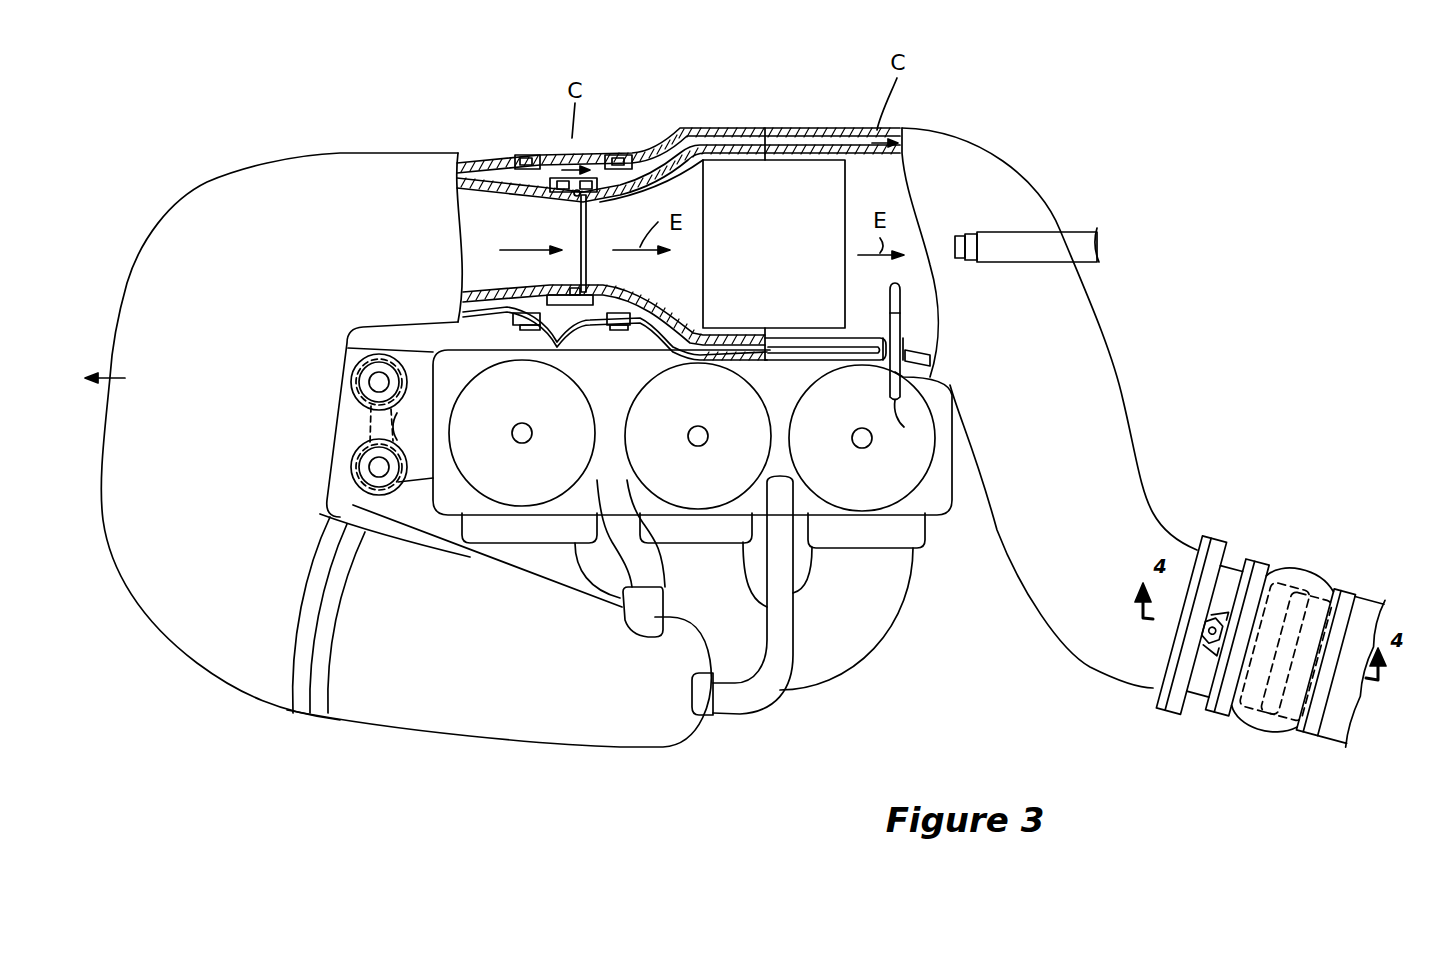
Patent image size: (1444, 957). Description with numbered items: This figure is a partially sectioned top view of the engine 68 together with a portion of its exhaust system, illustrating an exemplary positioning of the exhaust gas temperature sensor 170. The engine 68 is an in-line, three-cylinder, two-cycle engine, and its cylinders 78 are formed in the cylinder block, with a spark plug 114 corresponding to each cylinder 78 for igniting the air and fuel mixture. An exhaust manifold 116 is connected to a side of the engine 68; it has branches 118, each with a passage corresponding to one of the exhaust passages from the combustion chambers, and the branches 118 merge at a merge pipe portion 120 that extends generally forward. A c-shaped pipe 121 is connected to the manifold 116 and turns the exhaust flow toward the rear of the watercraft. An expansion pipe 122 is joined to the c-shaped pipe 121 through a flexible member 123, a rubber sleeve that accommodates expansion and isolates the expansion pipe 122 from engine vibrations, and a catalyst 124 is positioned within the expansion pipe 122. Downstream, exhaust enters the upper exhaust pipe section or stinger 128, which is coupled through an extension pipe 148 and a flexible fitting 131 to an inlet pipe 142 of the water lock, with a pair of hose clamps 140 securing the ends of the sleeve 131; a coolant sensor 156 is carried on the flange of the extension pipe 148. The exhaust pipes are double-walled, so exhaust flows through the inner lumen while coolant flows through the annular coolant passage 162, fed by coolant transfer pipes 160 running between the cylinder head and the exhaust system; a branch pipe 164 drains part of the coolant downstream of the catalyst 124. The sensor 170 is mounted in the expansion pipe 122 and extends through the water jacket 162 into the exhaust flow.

The engine 68 is at (740, 486).
The cylinders 78 is at (521, 497).
The spark plug 114 is at (517, 440).
The exhaust manifold 116 is at (802, 708).
The branches 118 is at (562, 570).
The merge pipe portion 120 is at (500, 707).
The c-shaped pipe 121 is at (219, 203).
The expansion pipe 122 is at (793, 130).
The flexible member 123 is at (538, 138).
The catalyst 124 is at (828, 170).
The upper exhaust pipe section or stinger 128 is at (1112, 363).
The flexible fitting 131 is at (1297, 565).
The hose clamps 140 is at (1262, 560).
The inlet pipe 142 is at (1365, 607).
The extension pipe 148 is at (1225, 548).
The sensor 156 is at (1193, 635).
The coolant transfer pipes 160 is at (642, 543).
The coolant passage 162 is at (650, 138).
The branch pipe 164 is at (1035, 243).
The exhaust gas temperature sensor 170 is at (905, 320).